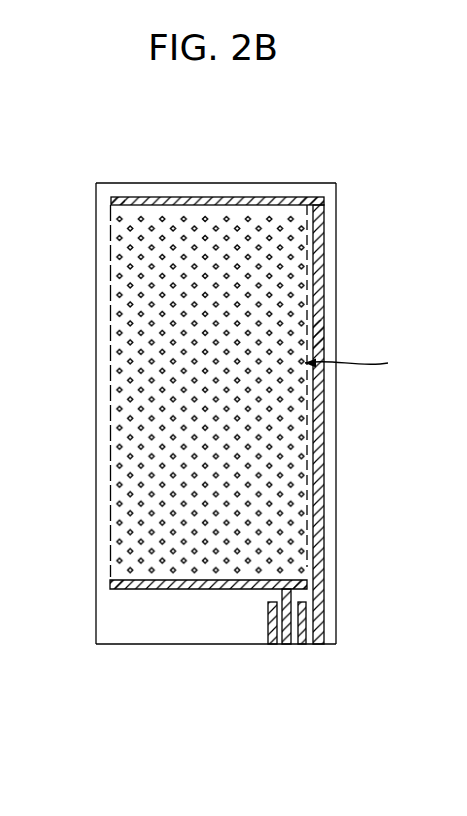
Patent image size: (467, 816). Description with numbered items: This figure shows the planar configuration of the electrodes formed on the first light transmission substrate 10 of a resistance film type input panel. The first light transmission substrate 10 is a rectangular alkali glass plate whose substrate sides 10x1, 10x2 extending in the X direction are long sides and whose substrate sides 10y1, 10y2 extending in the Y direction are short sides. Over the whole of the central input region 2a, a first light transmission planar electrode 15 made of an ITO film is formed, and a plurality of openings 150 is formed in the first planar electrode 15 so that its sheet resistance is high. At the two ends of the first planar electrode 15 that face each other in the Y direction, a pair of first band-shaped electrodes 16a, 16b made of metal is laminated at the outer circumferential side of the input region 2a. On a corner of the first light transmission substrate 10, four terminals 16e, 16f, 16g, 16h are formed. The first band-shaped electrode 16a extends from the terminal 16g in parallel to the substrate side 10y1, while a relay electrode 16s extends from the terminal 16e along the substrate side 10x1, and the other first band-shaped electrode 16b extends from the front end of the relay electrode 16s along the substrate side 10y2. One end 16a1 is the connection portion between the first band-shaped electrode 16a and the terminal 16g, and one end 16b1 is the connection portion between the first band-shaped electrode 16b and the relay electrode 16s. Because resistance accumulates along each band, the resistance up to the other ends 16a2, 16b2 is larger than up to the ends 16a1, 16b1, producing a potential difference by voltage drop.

The first light transmission substrate 10 is at (210, 409).
The substrate side 10x1 is at (336, 305).
The substrate side 10x2 is at (96, 367).
The substrate side 10y1 is at (120, 644).
The substrate side 10y2 is at (268, 183).
The first light transmission planar electrode 15 is at (264, 391).
The openings 150 is at (276, 429).
The first band-shaped electrode 16a is at (221, 622).
The one end of the first band-shaped electrode 16a1 is at (300, 582).
The other end of the first band-shaped electrode 16a2 is at (110, 587).
The first band-shaped electrode 16b is at (253, 177).
The one end of the first band-shaped electrode 16b1 is at (322, 217).
The other end of the first band-shaped electrode 16b2 is at (113, 197).
The terminal 16e is at (355, 454).
The terminal 16f is at (302, 644).
The terminal 16g is at (285, 644).
The terminal 16h is at (270, 644).
The relay electrode 16s is at (320, 336).
The input region 2a is at (359, 364).